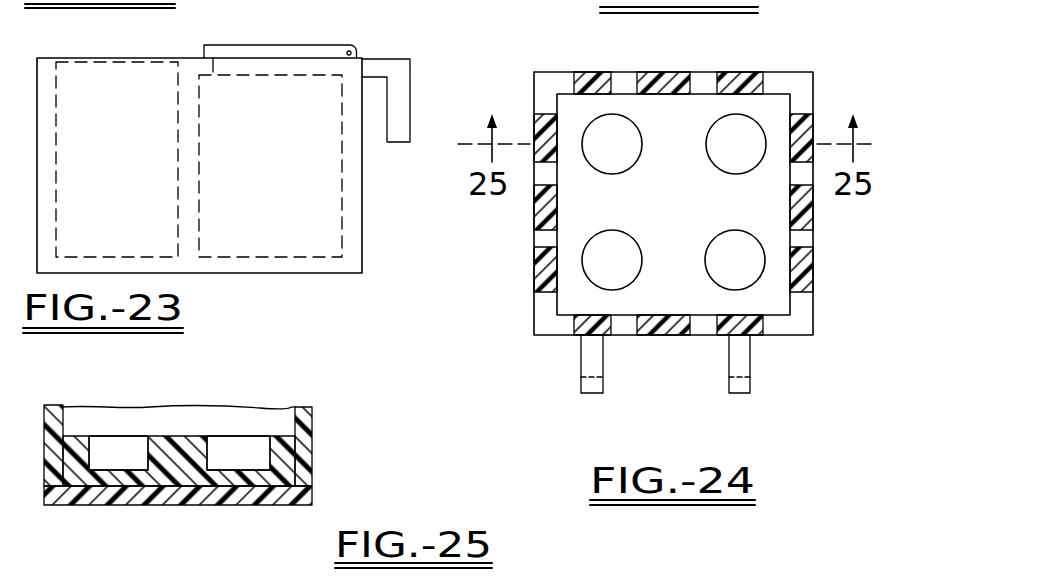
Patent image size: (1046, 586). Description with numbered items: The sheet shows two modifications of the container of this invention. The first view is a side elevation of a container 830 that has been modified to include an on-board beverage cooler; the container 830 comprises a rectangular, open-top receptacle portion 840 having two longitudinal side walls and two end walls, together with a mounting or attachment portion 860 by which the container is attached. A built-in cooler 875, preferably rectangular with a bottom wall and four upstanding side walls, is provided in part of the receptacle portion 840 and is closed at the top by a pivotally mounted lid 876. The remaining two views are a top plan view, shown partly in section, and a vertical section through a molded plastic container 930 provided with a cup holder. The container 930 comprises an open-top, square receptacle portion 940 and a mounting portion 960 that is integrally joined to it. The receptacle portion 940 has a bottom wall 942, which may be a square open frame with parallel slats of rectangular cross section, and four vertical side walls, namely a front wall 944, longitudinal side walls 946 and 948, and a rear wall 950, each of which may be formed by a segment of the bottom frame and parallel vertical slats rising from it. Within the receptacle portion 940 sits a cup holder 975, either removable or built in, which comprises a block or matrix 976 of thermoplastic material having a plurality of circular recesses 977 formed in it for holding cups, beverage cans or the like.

In FIG. 23, the container 830 is at (295, 277).
In FIG. 23, the receptacle portion 840 is at (363, 239).
In FIG. 23, the mounting or attachment portion 860 is at (403, 55).
In FIG. 23, the built-in cooler 875 is at (280, 172).
In FIG. 23, the pivotally mounted lid 876 is at (293, 45).
In FIG. 24, the container 930 is at (659, 239).
In FIG. 24, the receptacle portion 940 is at (534, 324).
In FIG. 25, the receptacle portion 940 is at (312, 472).
In FIG. 25, the bottom wall 942 is at (182, 505).
In FIG. 24, the front wall 944 is at (670, 72).
In FIG. 24, the longitudinal side wall 946 is at (535, 275).
In FIG. 24, the longitudinal side wall 948 is at (812, 268).
In FIG. 25, the longitudinal side wall 948 is at (313, 445).
In FIG. 24, the rear wall 950 is at (687, 337).
In FIG. 24, the mounting portion 960 is at (583, 392).
In FIG. 24, the cup holder 975 is at (765, 223).
In FIG. 25, the cup holder 975 is at (267, 440).
In FIG. 24, the block or matrix 976 is at (775, 105).
In FIG. 25, the block or matrix 976 is at (198, 436).
In FIG. 24, the circular recesses 977 is at (717, 160).
In FIG. 25, the circular recesses 977 is at (120, 468).